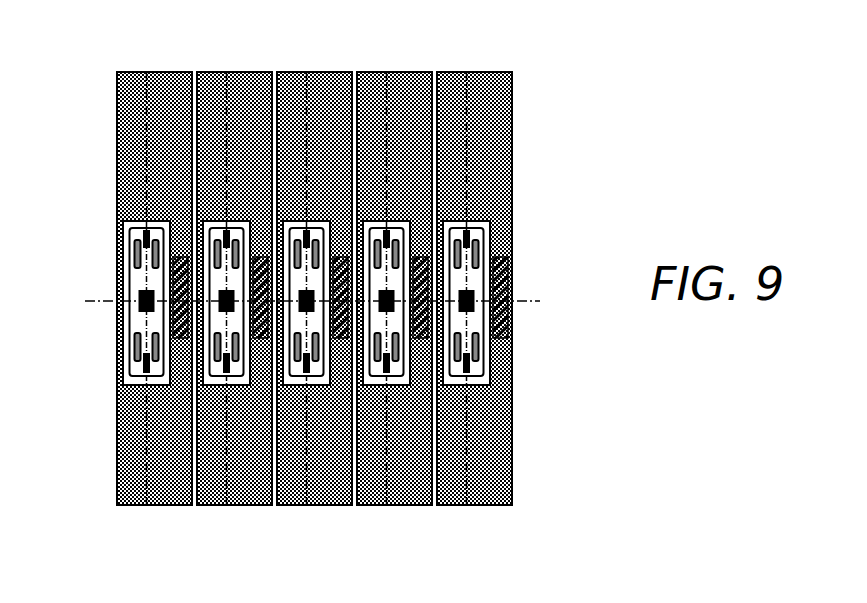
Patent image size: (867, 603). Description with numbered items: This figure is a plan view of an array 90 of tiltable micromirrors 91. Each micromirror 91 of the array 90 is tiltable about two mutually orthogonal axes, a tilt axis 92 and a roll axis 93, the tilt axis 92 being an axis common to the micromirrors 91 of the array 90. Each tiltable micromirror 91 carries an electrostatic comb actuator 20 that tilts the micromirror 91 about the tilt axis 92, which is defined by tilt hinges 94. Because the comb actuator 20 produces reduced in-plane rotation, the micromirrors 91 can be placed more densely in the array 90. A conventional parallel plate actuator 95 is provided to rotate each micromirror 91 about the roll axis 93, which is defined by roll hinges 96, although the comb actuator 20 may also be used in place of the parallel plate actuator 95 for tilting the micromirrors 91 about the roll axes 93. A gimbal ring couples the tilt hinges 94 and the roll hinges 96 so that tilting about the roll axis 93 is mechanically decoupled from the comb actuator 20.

The array 90 is at (606, 57).
The tiltable micromirror 91 is at (502, 487).
The tilt axis 92 is at (315, 302).
The roll axis 93 is at (466, 536).
The tilt hinge 94 is at (128, 292).
The parallel plate actuator 95 is at (508, 330).
The roll hinge 96 is at (490, 382).
The electrostatic comb actuator 20 is at (128, 343).